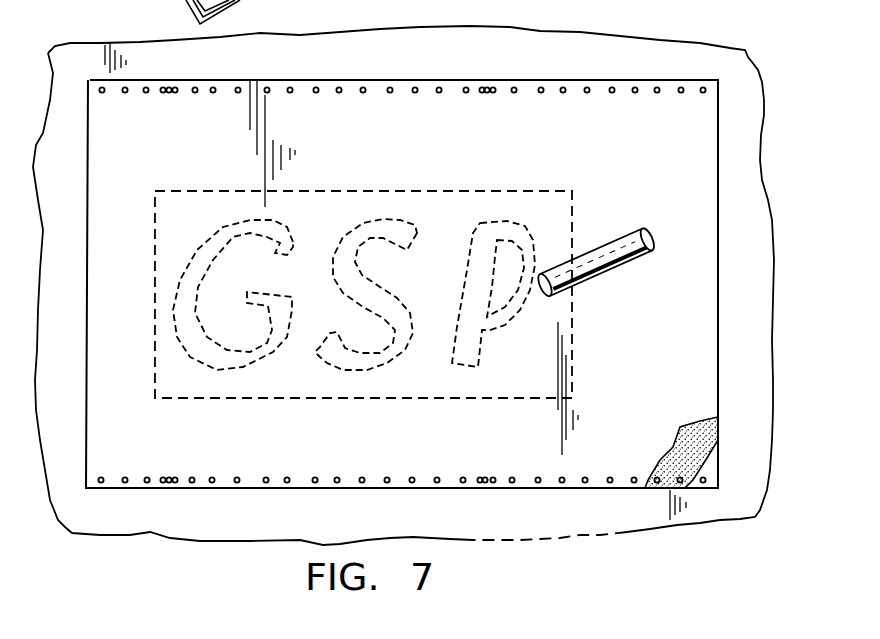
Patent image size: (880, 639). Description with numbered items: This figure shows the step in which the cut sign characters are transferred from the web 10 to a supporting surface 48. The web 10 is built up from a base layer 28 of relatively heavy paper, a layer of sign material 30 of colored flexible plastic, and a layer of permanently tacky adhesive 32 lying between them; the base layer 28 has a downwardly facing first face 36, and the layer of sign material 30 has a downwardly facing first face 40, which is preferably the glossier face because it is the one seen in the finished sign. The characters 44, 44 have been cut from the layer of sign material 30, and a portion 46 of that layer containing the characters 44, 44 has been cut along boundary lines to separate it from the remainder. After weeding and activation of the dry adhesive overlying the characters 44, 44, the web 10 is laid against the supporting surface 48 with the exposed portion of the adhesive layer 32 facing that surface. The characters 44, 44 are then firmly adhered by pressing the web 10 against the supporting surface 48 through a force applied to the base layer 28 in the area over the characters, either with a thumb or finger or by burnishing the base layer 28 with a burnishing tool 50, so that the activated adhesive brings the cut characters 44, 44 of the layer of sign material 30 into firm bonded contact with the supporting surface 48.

The web 10 is at (433, 75).
The base layer 28 is at (605, 460).
The layer of sign material 30 is at (712, 475).
The layer of permanently tacky adhesive 32 is at (708, 430).
The first face of the base layer 36 is at (692, 210).
The first face of the layer of sign material 40 is at (707, 460).
The characters 44 is at (313, 352).
The portion of the layer of sign material 46 is at (573, 331).
The supporting surface 48 is at (337, 53).
The burnishing tool 50 is at (617, 240).